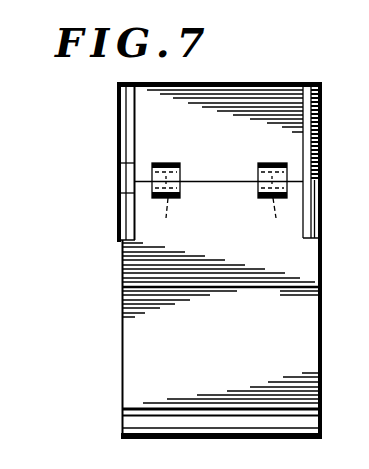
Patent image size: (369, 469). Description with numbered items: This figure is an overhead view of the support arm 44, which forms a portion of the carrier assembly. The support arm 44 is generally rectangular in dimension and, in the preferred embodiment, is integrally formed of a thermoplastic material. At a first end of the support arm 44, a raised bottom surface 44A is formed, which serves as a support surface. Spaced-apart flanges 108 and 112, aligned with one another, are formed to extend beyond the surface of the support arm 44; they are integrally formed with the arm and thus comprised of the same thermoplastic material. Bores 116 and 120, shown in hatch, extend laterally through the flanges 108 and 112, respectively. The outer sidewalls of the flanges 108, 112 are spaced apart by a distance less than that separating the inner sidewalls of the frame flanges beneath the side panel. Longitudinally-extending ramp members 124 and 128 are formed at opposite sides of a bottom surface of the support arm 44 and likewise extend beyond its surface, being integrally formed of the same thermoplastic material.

The support arm 44 is at (100, 132).
The raised bottom surface 44A is at (133, 420).
The flange 108 is at (168, 163).
The flange 112 is at (273, 163).
The bore 116 is at (170, 222).
The bore 120 is at (274, 222).
The ramp member 124 is at (128, 215).
The ramp member 128 is at (307, 219).